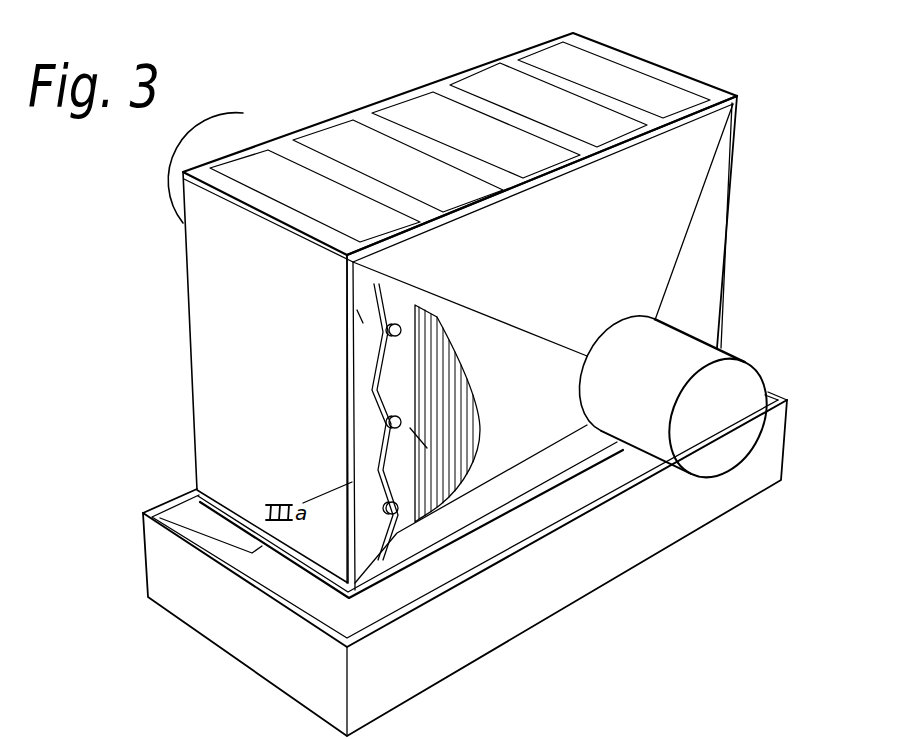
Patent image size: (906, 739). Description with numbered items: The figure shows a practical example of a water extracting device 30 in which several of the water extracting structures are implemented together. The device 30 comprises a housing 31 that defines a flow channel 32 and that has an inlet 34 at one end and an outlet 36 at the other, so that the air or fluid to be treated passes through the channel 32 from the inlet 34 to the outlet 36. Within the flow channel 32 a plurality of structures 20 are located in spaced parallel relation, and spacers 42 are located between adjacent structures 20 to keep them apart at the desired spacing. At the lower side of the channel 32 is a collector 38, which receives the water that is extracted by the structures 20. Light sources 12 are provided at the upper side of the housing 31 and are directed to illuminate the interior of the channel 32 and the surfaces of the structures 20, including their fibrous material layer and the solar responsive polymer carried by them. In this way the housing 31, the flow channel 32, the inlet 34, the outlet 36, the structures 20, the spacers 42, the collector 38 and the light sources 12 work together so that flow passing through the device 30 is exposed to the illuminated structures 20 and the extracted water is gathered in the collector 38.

The light sources 12 is at (690, 95).
The structure 20 is at (437, 317).
The water extracting device 30 is at (173, 319).
The housing 31 is at (637, 56).
The flow channel 32 is at (677, 185).
The inlet 34 is at (236, 128).
The outlet 36 is at (703, 355).
The collector 38 is at (630, 570).
The spacers 42 is at (388, 422).